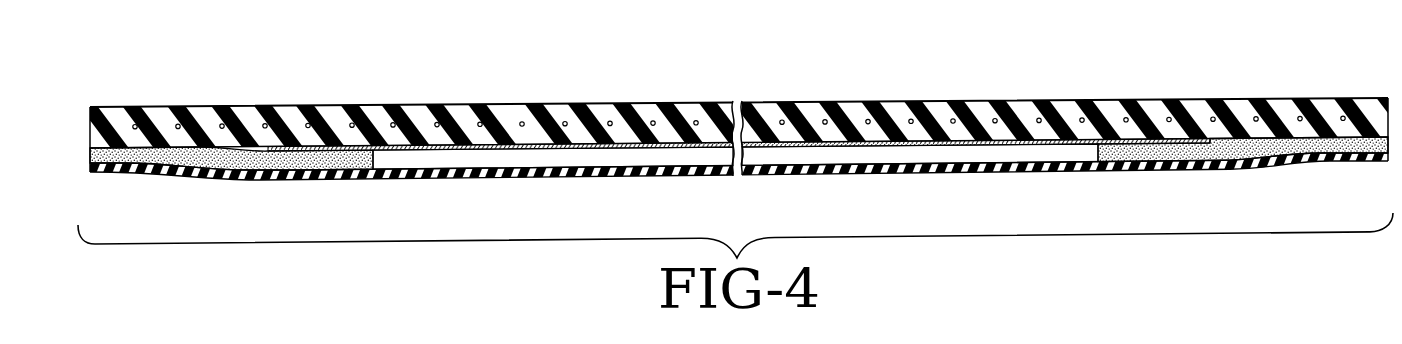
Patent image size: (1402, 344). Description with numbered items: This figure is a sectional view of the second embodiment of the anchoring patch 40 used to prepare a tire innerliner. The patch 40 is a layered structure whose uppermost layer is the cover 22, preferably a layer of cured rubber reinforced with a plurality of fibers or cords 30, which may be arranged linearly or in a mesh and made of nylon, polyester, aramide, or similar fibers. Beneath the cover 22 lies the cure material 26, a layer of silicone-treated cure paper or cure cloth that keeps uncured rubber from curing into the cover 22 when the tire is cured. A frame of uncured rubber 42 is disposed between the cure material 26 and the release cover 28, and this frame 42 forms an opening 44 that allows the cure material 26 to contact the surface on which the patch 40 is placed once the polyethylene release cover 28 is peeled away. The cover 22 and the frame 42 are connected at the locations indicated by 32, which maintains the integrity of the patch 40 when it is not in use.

The anchoring patch 40 is at (294, 67).
The cover 22 is at (360, 115).
The reinforcing cords 30 is at (564, 121).
The cure material 26 is at (977, 144).
The opening 44 is at (907, 157).
The release cover 28 is at (1064, 166).
The frame of uncured rubber 42 is at (243, 157).
The connection of cover and frame 32 is at (128, 147).